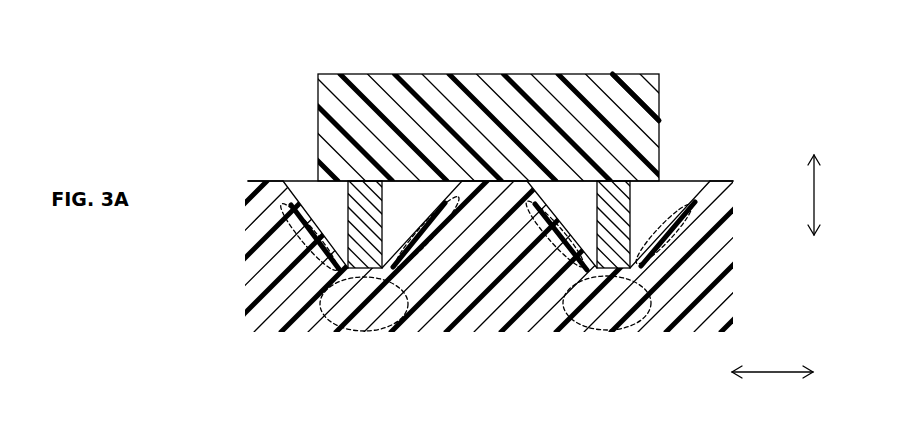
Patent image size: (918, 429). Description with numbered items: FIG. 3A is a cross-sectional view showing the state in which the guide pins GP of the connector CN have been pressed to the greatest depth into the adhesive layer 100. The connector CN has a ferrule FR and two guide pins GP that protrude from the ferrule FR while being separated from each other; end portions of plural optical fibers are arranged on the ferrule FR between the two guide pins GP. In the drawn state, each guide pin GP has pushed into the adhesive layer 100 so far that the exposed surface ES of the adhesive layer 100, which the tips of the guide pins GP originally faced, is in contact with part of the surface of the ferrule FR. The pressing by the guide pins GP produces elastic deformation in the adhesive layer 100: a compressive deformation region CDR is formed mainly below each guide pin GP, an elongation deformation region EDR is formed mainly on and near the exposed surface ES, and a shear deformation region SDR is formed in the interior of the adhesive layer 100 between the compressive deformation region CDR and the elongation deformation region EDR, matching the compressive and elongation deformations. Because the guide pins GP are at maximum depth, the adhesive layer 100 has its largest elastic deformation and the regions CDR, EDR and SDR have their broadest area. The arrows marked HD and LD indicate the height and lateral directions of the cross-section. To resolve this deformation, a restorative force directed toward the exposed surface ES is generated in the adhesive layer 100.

The adhesive layer 100 is at (503, 318).
The connector CN is at (481, 65).
The ferrule FR is at (648, 121).
The guide pin GP is at (362, 210).
The elongation deformation region EDR is at (424, 214).
The exposed surface ES is at (515, 181).
The shear deformation region SDR is at (307, 268).
The compressive deformation region CDR is at (362, 331).
The height direction HD is at (835, 195).
The lateral direction LD is at (772, 381).